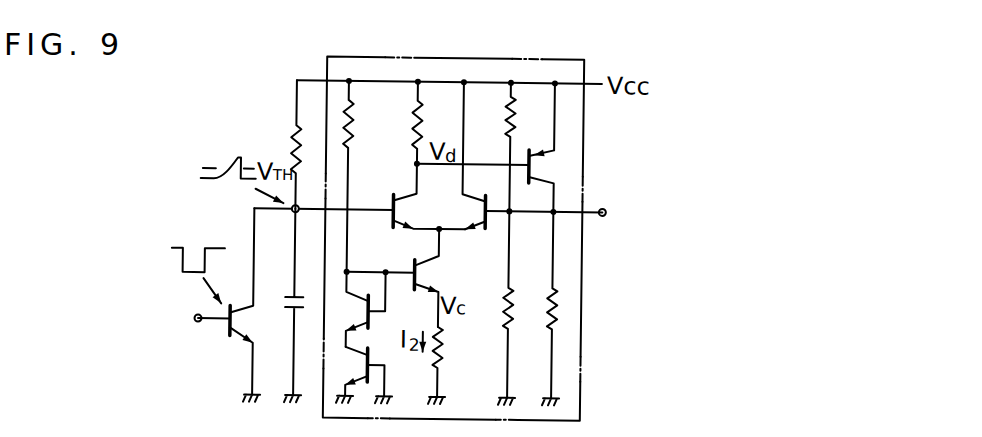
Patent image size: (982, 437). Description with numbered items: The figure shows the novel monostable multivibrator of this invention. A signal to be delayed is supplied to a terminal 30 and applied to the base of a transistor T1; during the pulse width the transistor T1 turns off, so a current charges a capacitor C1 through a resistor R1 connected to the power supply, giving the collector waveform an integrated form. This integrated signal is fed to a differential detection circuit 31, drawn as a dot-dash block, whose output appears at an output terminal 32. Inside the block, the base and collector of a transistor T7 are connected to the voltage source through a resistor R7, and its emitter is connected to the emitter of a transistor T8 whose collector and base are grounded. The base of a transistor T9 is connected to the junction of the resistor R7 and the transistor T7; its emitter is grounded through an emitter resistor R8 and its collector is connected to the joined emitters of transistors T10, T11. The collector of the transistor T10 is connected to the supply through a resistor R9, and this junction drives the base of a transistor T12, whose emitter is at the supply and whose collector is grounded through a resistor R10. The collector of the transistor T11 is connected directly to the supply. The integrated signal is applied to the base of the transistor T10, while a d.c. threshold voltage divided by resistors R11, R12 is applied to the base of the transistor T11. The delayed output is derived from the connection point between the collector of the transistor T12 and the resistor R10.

The terminal 30 is at (192, 321).
The differential detection circuit 31 is at (409, 58).
The output terminal 32 is at (607, 210).
The transistor T1 is at (237, 322).
The resistor R1 is at (292, 147).
The capacitor C1 is at (286, 303).
The resistor R7 is at (353, 141).
The emitter resistor R8 is at (443, 343).
The resistor R9 is at (419, 142).
The resistor R10 is at (557, 303).
The resistor R11 is at (513, 138).
The resistor R12 is at (513, 304).
The transistor T7 is at (367, 316).
The transistor T8 is at (367, 366).
The transistor T9 is at (420, 275).
The transistor T10 is at (394, 195).
The transistor T11 is at (480, 209).
The transistor T12 is at (531, 168).